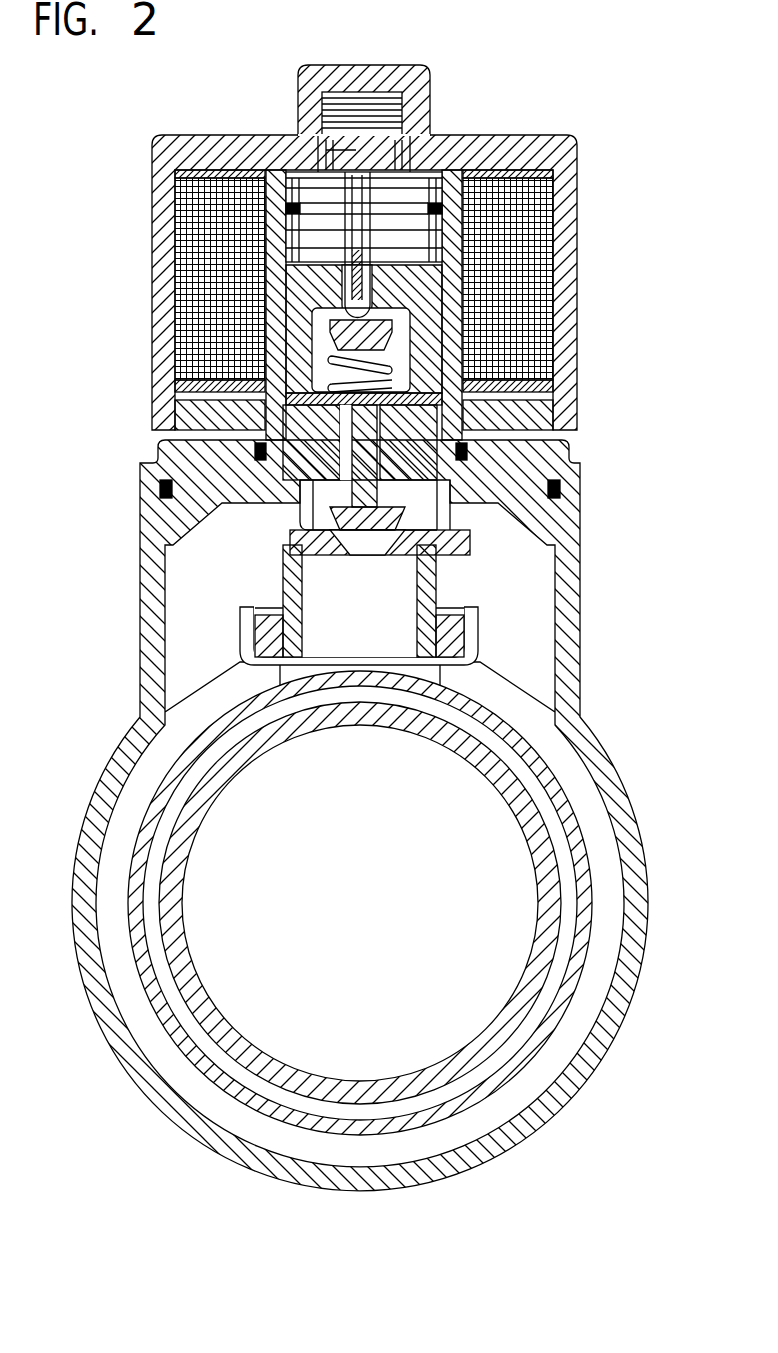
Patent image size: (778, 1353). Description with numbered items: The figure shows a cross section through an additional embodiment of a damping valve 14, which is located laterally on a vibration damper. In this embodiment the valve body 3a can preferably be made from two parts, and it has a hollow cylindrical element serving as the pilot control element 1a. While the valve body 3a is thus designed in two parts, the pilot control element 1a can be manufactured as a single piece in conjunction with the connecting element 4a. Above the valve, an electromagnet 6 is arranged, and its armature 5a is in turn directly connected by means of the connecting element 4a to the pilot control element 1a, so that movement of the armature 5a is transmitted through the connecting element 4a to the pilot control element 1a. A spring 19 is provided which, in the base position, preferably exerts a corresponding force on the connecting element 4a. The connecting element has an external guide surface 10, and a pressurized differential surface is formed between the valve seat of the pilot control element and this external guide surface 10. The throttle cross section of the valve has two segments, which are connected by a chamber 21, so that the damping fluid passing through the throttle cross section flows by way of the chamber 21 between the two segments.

The damping valve 14 is at (588, 386).
The electromagnet 6 is at (552, 196).
The armature 5a is at (502, 281).
The spring 19 is at (403, 365).
The external guide surface 10 is at (282, 444).
The connecting element 4a is at (556, 433).
The pilot control element 1a is at (448, 518).
The valve body 3a is at (402, 558).
The chamber 21 is at (352, 558).